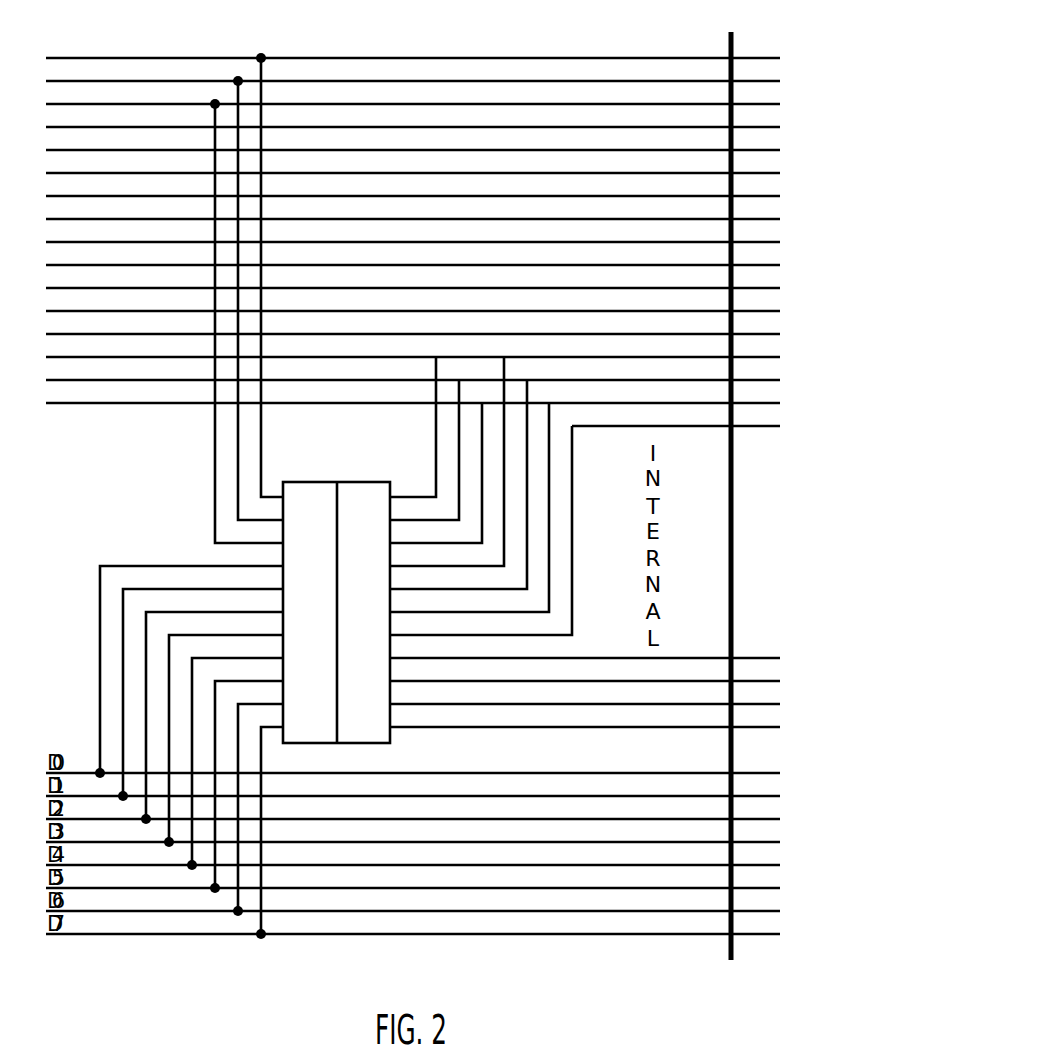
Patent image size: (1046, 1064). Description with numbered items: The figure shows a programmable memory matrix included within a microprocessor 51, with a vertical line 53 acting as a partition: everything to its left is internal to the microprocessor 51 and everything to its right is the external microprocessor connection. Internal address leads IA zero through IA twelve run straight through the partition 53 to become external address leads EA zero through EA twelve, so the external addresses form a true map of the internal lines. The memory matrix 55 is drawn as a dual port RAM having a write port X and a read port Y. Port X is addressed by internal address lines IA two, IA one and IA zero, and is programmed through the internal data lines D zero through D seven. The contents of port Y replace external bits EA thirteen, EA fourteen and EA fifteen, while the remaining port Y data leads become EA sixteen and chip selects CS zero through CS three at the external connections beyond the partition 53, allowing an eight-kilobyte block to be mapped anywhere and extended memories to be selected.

The microprocessor 51 is at (423, 46).
The vertical line 53 is at (731, 48).
The memory matrix 55 is at (297, 478).